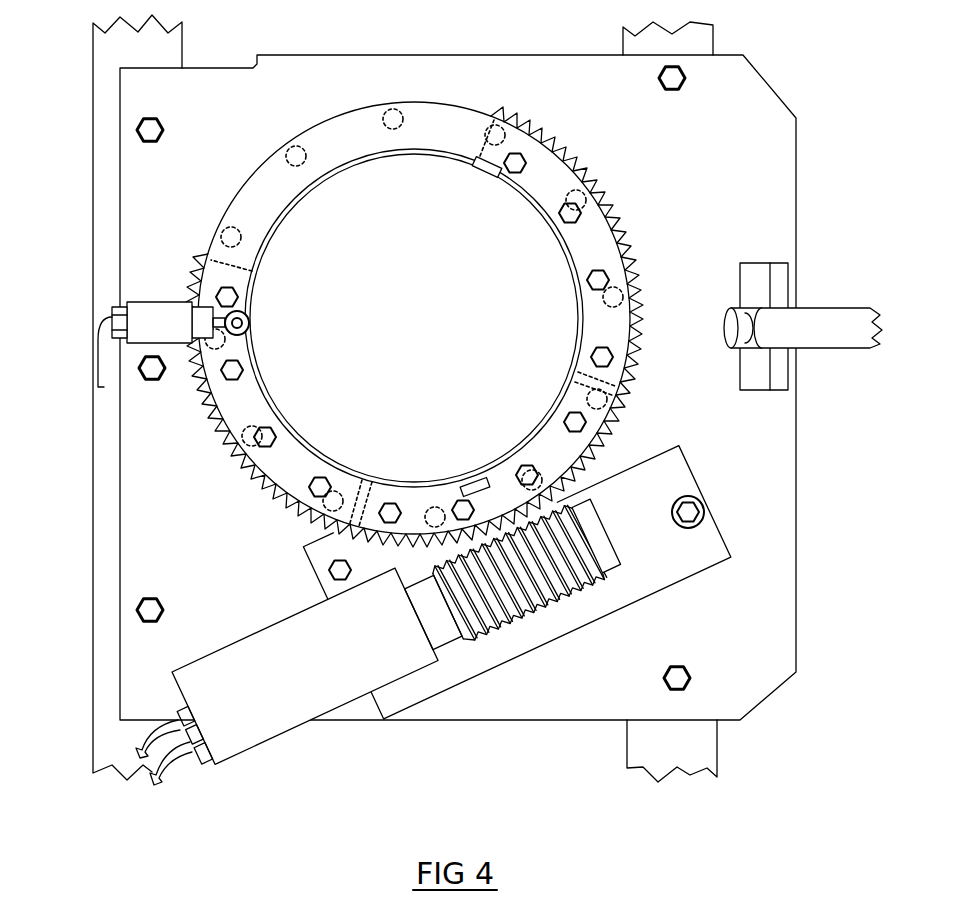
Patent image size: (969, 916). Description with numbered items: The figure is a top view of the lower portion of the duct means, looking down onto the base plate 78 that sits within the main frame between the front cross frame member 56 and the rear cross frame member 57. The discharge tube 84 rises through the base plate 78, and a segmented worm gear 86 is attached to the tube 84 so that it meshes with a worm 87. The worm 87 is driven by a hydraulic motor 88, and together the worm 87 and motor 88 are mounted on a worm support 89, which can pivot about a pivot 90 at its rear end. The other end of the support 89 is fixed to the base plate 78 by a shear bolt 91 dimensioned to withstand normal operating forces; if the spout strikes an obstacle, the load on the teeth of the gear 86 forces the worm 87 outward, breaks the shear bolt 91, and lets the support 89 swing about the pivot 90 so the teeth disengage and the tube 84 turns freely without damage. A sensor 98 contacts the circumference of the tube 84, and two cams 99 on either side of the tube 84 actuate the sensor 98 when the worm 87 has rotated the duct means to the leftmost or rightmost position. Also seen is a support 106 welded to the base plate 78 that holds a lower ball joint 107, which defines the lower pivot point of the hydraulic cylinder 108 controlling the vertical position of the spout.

The cross frame member 56 is at (112, 740).
The cross frame member 57 is at (700, 742).
The base plate 78 is at (148, 560).
The discharge tube 84 is at (296, 423).
The segmented worm gear 86 is at (232, 452).
The worm 87 is at (538, 598).
The hydraulic motor 88 is at (243, 735).
The worm support 89 is at (690, 545).
The pivot 90 is at (700, 503).
The shear bolt 91 is at (330, 566).
The sensor 98 is at (177, 337).
The cams 99 is at (490, 172).
The support 106 is at (777, 295).
The ball joint 107 is at (740, 308).
The hydraulic cylinder 108 is at (822, 340).